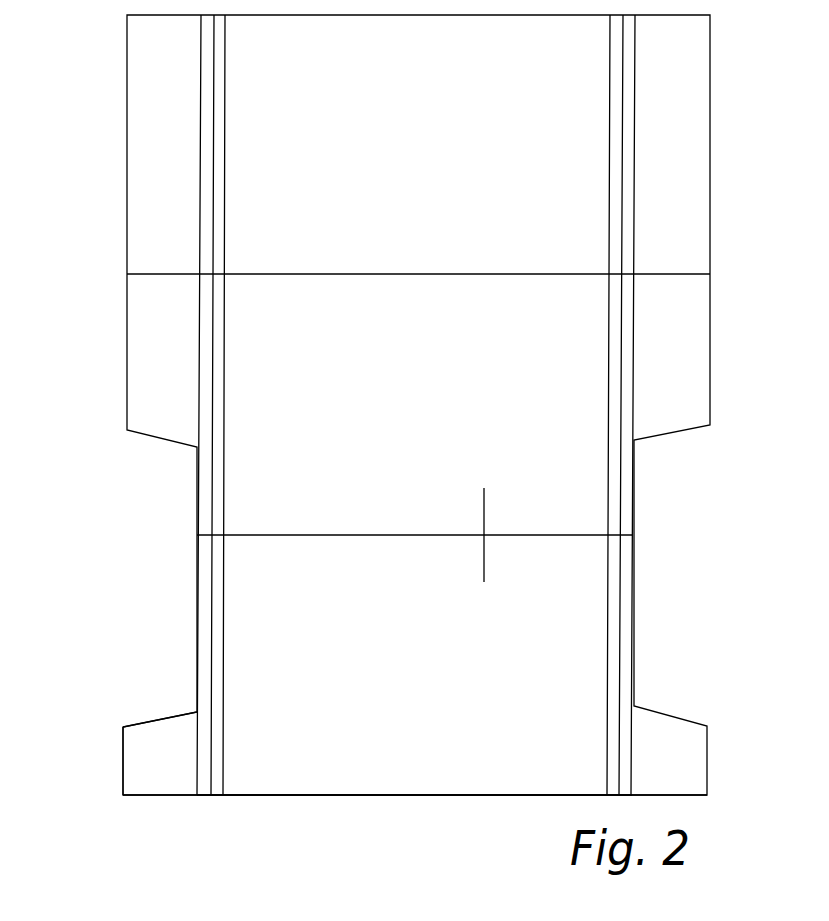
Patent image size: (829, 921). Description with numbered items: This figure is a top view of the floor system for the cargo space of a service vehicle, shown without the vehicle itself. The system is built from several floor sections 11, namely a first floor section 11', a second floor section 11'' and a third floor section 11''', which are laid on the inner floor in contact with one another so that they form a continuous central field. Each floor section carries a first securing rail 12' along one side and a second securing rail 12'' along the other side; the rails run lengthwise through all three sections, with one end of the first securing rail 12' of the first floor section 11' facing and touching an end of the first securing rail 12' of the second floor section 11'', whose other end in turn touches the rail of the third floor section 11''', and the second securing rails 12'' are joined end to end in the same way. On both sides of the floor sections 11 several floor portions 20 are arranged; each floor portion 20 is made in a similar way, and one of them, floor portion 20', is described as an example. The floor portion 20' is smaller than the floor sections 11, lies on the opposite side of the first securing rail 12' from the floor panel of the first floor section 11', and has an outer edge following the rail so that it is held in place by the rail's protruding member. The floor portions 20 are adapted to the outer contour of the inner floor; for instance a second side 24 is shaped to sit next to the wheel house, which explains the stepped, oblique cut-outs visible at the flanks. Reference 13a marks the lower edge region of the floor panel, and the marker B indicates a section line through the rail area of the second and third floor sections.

The floor section 11 is at (418, 469).
The first floor section 11' is at (414, 726).
The second floor section 11'' is at (414, 466).
The third floor section 11''' is at (418, 209).
The first securing rail 12' is at (146, 405).
The second securing rail 12'' is at (692, 405).
The floor portion 20 is at (415, 407).
The floor portion 20' is at (101, 797).
The second side 24 is at (137, 718).
The bottom edge 13a is at (398, 797).
The section line B is at (486, 575).